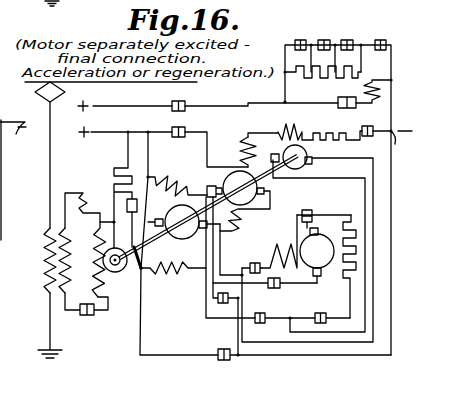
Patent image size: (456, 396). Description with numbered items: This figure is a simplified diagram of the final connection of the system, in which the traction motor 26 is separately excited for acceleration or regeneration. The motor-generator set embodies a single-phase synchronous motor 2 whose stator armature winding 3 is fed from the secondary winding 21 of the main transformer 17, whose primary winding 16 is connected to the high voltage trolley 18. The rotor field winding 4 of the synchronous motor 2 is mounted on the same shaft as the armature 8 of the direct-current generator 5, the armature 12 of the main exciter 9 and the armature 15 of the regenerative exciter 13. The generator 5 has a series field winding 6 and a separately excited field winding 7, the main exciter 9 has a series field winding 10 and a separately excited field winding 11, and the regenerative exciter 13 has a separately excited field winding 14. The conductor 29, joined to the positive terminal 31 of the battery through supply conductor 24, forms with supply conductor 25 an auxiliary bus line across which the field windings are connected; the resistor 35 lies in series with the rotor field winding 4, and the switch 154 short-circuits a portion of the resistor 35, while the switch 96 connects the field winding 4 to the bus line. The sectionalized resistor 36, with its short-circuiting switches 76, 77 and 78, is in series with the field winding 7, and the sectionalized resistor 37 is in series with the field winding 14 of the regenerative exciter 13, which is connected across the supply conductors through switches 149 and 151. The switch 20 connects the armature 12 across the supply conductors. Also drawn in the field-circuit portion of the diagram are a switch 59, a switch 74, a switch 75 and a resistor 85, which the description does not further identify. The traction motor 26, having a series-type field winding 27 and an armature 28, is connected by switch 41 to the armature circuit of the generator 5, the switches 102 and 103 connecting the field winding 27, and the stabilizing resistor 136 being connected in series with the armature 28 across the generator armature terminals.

The single-phase synchronous motor 2 is at (262, 324).
The stator armature winding 3 is at (93, 261).
The rotor field winding 4 is at (117, 273).
The direct-current generator 5 is at (243, 180).
The series field winding 6 is at (243, 224).
The separately excited field winding 7 is at (246, 135).
The armature 8 is at (220, 186).
The main exciter 9 is at (182, 222).
The series field winding 10 is at (185, 272).
The separately excited field winding 11 is at (190, 184).
The armature 12 is at (165, 213).
The regenerative exciter 13 is at (335, 175).
The separately excited field winding 14 is at (292, 126).
The armature 15 is at (285, 150).
The primary winding 16 is at (45, 292).
The main transformer 17 is at (70, 331).
The high voltage trolley 18 is at (97, 82).
The switch 20 is at (206, 313).
The secondary winding 21 is at (70, 224).
The supply conductor 24 is at (133, 105).
The supply conductor 25 is at (207, 141).
The direct-current traction motor 26 is at (335, 234).
The series-type field winding 27 is at (292, 264).
The armature 28 is at (322, 279).
The conductor 29 is at (118, 132).
The positive terminal 31 is at (325, 323).
The resistor 35 is at (112, 190).
The sectionalized resistor 36 is at (318, 80).
The sectionalized resistor 37 is at (331, 135).
The switch L41 41 is at (282, 290).
The contactor 59 is at (346, 98).
The contactor 74 is at (188, 128).
The contactor 75 is at (383, 40).
The switch 76 is at (294, 39).
The switch 77 is at (330, 30).
The switch 78 is at (347, 39).
The resistor 85 is at (380, 100).
The switch 96 is at (230, 357).
The switch 102 is at (309, 210).
The switch 103 is at (258, 263).
The stabilizing resistor 136 is at (350, 216).
The switch 149 is at (188, 103).
The switch 151 is at (370, 142).
The switch 154 is at (135, 247).